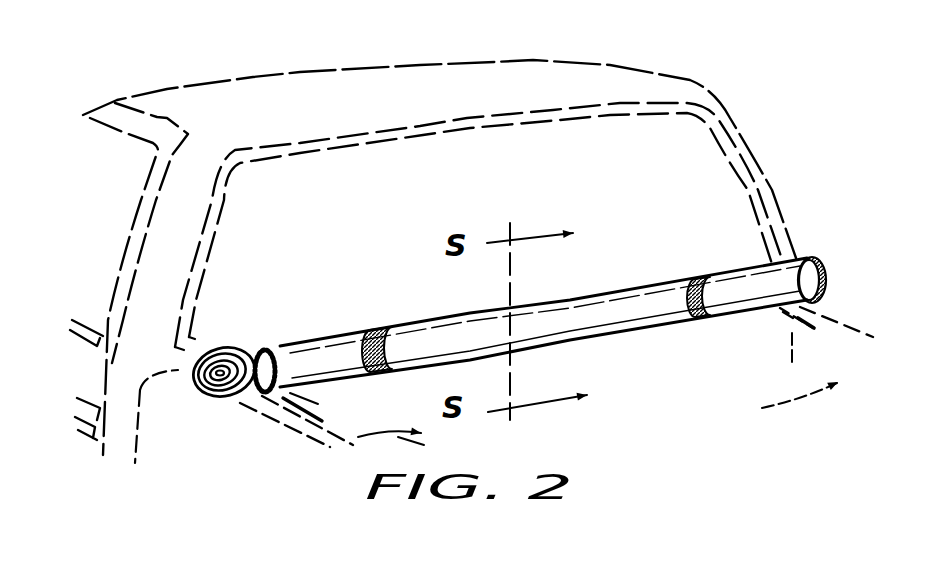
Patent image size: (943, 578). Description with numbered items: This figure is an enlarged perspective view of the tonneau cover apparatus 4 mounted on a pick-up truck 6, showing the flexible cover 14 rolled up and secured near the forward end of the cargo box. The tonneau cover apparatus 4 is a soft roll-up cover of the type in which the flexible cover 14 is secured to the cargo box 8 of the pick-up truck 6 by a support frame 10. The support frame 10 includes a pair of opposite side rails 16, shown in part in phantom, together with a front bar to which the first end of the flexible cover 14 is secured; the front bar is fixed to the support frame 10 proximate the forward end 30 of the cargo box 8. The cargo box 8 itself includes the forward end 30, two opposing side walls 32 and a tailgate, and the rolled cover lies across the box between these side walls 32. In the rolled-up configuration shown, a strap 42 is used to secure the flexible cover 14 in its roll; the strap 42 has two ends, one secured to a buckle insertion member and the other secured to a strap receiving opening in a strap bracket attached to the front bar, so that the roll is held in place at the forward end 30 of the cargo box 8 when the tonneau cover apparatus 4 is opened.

The tonneau cover apparatus 4 is at (493, 330).
The pick-up truck 6 is at (278, 103).
The cargo box 8 is at (325, 447).
The support frame 10 is at (258, 402).
The flexible cover 14 is at (437, 323).
The side rails 16 is at (345, 424).
The forward end 30 is at (780, 366).
The side walls 32 is at (777, 402).
The strap 42 is at (358, 333).